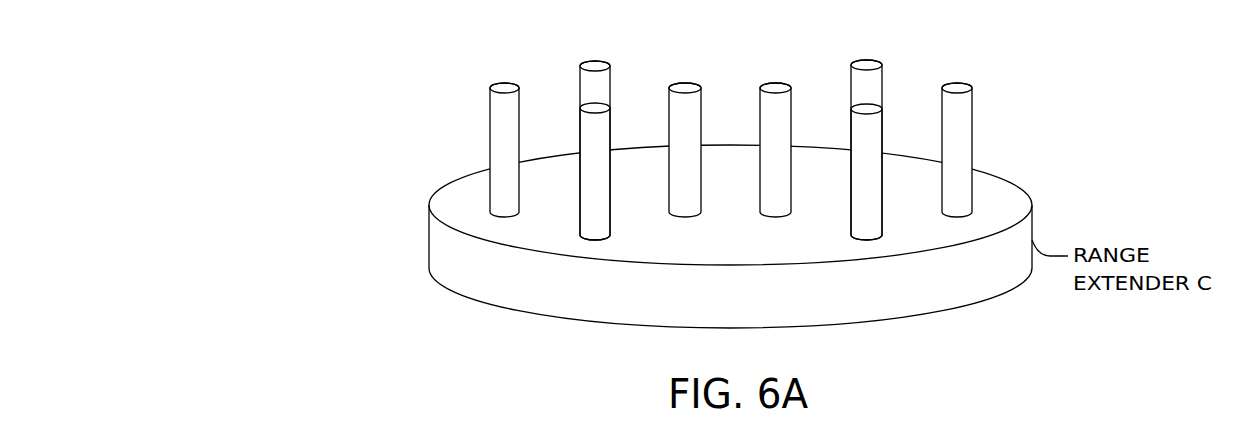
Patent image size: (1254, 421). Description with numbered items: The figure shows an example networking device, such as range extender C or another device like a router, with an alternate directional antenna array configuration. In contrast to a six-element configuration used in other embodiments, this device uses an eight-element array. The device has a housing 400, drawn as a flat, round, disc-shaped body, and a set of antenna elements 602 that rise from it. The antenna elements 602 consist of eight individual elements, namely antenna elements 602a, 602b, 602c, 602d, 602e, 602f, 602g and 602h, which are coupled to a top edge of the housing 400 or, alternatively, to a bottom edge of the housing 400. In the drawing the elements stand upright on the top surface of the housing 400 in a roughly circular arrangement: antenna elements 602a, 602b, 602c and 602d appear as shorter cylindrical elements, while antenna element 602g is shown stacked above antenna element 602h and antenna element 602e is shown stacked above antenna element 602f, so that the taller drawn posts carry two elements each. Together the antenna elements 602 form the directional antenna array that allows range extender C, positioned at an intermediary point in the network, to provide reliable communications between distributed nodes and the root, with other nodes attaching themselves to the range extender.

The housing 400 is at (452, 202).
The antenna elements 602 is at (822, 135).
The antenna element 602a is at (957, 83).
The antenna element 602b is at (776, 83).
The antenna element 602c is at (686, 83).
The antenna element 602d is at (504, 83).
The antenna element 602e is at (866, 60).
The antenna element 602f is at (865, 103).
The antenna element 602g is at (595, 60).
The antenna element 602h is at (593, 104).